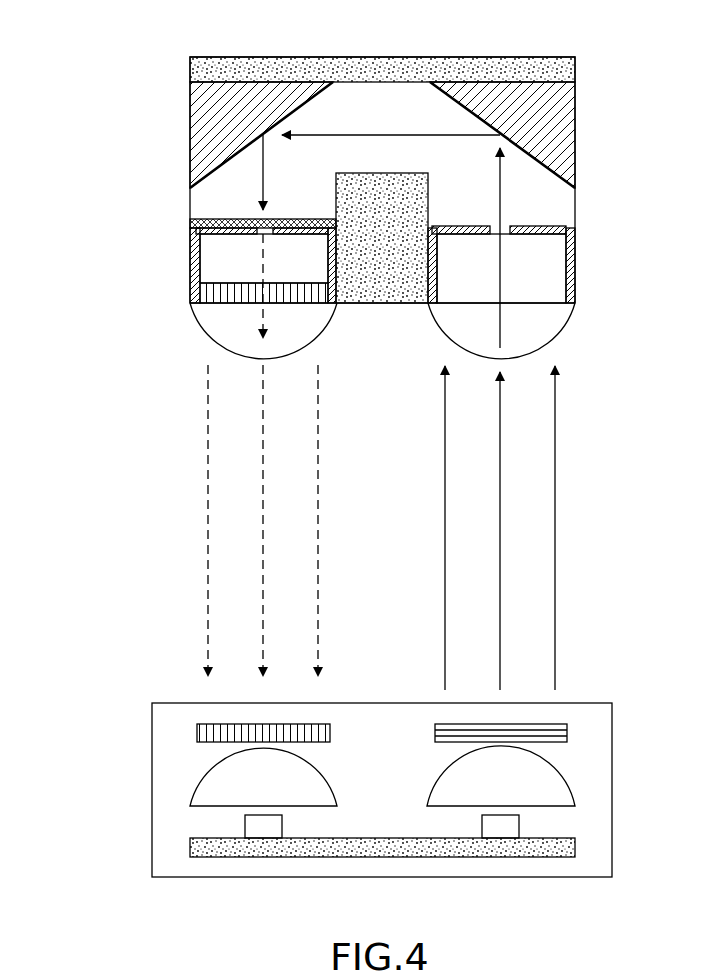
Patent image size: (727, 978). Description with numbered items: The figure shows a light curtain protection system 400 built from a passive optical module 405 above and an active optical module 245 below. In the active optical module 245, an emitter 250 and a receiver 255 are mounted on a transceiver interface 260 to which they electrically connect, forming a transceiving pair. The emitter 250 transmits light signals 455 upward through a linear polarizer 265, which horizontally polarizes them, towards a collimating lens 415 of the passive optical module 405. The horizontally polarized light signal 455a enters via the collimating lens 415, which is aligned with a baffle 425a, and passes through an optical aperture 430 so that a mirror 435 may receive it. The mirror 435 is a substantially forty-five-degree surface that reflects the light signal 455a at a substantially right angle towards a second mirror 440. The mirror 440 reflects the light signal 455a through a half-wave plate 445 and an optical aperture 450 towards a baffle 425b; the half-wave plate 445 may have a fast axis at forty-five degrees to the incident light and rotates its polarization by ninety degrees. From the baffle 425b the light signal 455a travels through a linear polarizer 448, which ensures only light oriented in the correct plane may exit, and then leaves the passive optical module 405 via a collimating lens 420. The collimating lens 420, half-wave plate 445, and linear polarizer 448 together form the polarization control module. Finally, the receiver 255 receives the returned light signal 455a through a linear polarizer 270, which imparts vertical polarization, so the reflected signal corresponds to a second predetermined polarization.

The light curtain protection system 400 is at (95, 235).
The passive optical module 405 is at (575, 62).
The mirror 440 is at (238, 80).
The mirror 435 is at (525, 88).
The half-wave plate 445 is at (215, 218).
The linear polarizer 448 is at (307, 291).
The baffle 425b is at (193, 238).
The optical aperture 450 is at (265, 240).
The collimating lens 420 is at (204, 326).
The optical aperture 430 is at (505, 228).
The baffle 425a is at (573, 266).
The collimating lens 415 is at (558, 332).
The light signals 455 is at (565, 470).
The light signal 455a is at (263, 530).
The active optical module 245 is at (612, 830).
The linear polarizer 270 is at (200, 722).
The linear polarizer 265 is at (555, 724).
The receiver 255 is at (258, 824).
The emitter 250 is at (505, 828).
The transceiver interface 260 is at (303, 848).